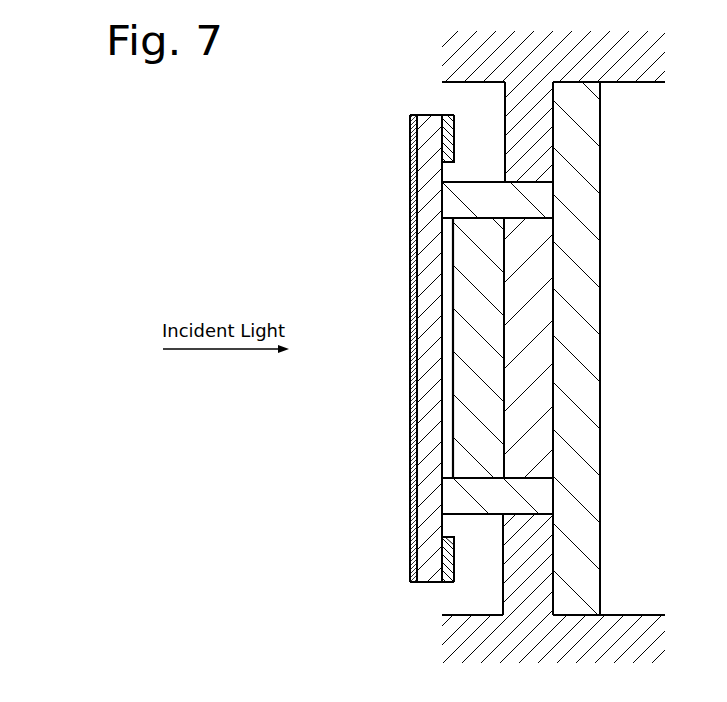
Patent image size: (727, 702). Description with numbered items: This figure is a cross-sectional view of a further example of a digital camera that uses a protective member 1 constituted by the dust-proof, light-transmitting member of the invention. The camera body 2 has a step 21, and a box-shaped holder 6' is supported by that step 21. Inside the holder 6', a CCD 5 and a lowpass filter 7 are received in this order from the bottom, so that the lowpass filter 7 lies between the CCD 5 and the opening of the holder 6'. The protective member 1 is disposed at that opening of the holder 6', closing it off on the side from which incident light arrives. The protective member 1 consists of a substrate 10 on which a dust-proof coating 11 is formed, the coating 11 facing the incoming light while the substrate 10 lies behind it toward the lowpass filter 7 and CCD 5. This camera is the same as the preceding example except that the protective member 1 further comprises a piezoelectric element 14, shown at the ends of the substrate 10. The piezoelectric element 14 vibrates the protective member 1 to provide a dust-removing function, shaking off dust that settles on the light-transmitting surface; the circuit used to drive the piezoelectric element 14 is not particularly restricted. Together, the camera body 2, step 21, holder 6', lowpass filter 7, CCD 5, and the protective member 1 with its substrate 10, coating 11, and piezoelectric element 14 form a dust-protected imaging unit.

The protective member 1 is at (338, 198).
The camera body 2 is at (531, 69).
The CCD 5 is at (533, 347).
The box-shaped holder 6' is at (576, 348).
The lowpass filter 7 is at (483, 347).
The substrate 10 is at (427, 262).
The dust-proof coating 11 is at (410, 322).
The piezoelectric element 14 is at (445, 146).
The step 21 is at (533, 140).